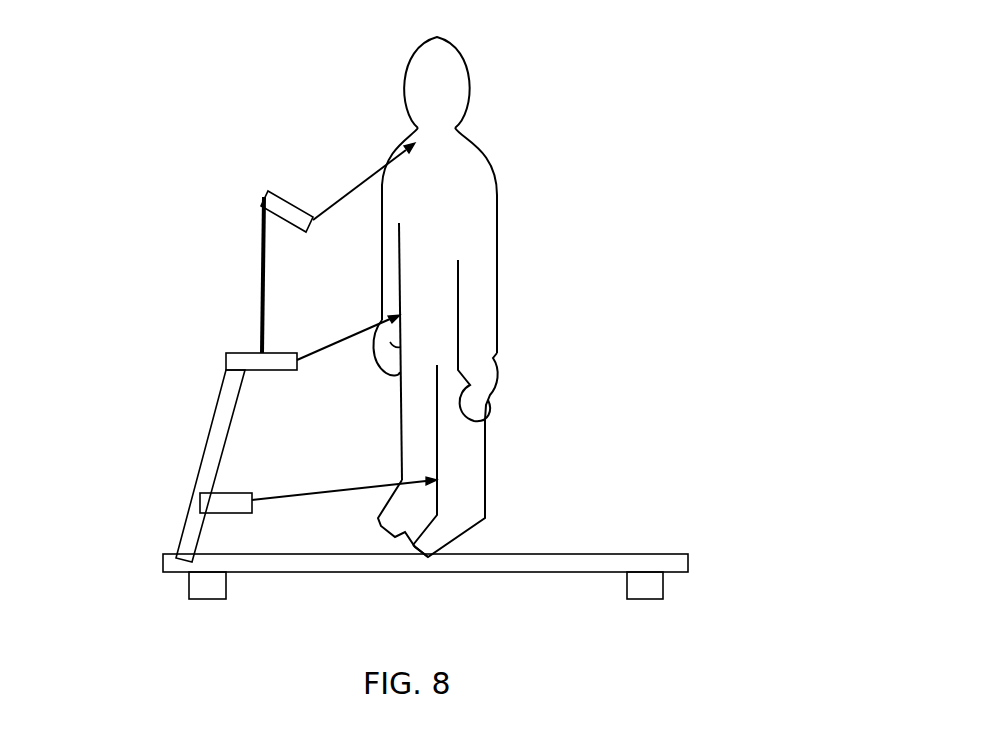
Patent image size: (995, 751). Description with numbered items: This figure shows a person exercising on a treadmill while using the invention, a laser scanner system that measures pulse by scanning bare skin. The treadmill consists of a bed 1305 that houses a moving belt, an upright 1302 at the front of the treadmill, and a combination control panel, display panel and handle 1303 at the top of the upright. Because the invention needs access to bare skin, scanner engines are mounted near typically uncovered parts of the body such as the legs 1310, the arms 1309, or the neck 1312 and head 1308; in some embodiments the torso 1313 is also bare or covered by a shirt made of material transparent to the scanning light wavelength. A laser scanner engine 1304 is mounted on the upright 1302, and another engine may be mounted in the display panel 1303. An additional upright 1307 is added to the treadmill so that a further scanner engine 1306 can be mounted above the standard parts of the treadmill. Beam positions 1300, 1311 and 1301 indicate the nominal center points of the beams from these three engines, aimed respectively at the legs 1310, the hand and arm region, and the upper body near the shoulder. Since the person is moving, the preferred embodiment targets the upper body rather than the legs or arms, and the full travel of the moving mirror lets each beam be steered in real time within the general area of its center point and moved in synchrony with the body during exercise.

The beam position 1300 is at (349, 478).
The beam position 1301 is at (332, 194).
The upright 1302 is at (193, 447).
The combination control panel, display panel and handle 1303 is at (226, 347).
The laser scanner engine 1304 is at (216, 501).
The bed 1305 is at (701, 566).
The scanner engine 1306 is at (252, 191).
The additional upright 1307 is at (252, 253).
The head 1308 is at (455, 50).
The arms 1309 is at (508, 298).
The legs 1310 is at (479, 473).
The beam position 1311 is at (349, 327).
The neck 1312 is at (468, 126).
The torso 1313 is at (443, 178).